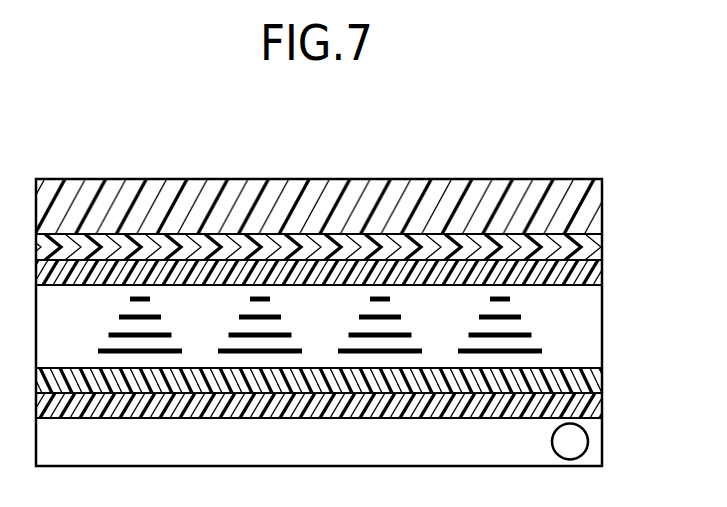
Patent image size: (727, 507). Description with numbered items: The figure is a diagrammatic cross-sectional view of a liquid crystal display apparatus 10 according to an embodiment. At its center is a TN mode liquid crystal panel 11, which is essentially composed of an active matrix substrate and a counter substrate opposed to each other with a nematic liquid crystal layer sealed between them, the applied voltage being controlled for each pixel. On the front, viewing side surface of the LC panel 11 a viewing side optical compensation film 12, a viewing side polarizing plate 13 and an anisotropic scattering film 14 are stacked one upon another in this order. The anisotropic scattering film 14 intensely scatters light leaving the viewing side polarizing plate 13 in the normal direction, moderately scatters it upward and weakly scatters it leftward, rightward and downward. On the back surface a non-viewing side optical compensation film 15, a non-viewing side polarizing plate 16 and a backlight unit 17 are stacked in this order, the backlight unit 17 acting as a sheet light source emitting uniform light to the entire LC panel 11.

The liquid crystal display apparatus 10 is at (318, 109).
The TN mode liquid crystal panel 11 is at (595, 322).
The viewing side optical compensation film 12 is at (596, 262).
The viewing side polarizing plate 13 is at (596, 236).
The anisotropic scattering film 14 is at (594, 203).
The non-viewing side optical compensation film 15 is at (597, 375).
The non-viewing side polarizing plate 16 is at (597, 398).
The backlight unit 17 is at (598, 438).